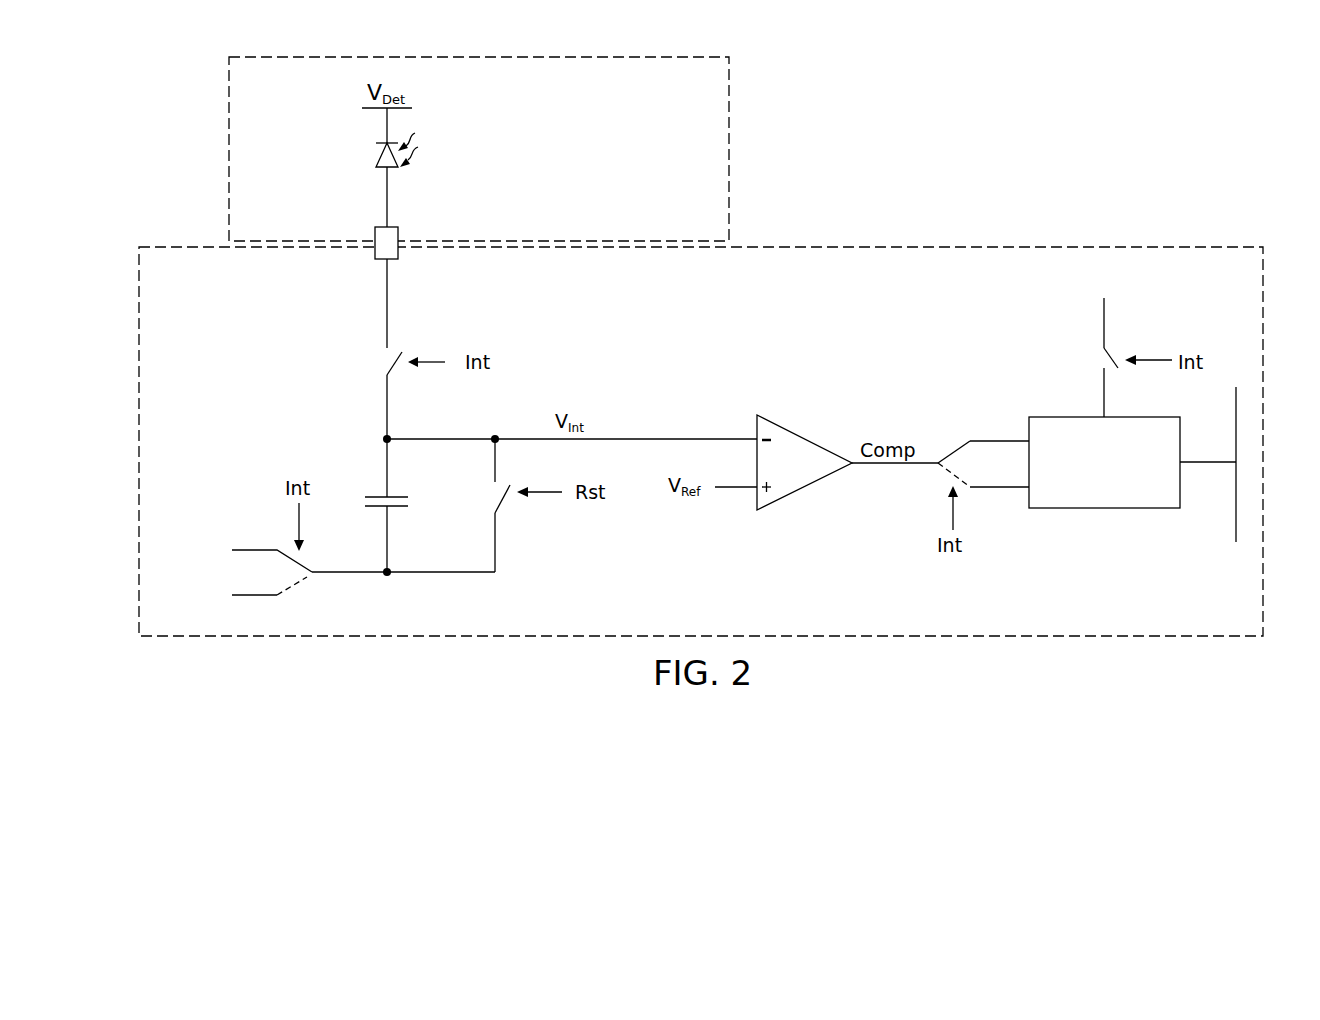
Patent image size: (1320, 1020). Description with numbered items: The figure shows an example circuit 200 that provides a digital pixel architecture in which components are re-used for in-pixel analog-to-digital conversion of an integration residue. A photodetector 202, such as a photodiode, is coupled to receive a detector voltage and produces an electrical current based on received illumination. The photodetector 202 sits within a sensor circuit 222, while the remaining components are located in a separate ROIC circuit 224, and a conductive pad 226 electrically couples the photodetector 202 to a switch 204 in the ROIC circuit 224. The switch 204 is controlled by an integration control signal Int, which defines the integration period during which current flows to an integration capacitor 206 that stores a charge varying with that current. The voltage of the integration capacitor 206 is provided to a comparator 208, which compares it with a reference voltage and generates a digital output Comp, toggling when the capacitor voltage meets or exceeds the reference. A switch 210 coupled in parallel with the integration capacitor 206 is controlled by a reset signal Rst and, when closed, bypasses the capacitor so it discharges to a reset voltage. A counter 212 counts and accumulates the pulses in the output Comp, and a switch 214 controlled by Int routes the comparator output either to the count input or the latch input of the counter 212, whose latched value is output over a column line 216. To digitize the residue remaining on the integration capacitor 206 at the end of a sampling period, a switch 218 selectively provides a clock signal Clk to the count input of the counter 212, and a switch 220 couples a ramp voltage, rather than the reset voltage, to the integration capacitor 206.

The circuit 200 is at (1026, 113).
The photodetector 202 is at (377, 156).
The switch 204 is at (388, 373).
The integration capacitor 206 is at (368, 497).
The comparator 208 is at (795, 432).
The switch 210 is at (495, 510).
The counter 212 is at (1104, 508).
The switch 214 is at (970, 441).
The column line 216 is at (1233, 528).
The switch 218 is at (1105, 355).
The switch 220 is at (303, 578).
The sensor circuit 222 is at (729, 150).
The ROIC circuit 224 is at (947, 247).
The conductive pad 226 is at (398, 233).